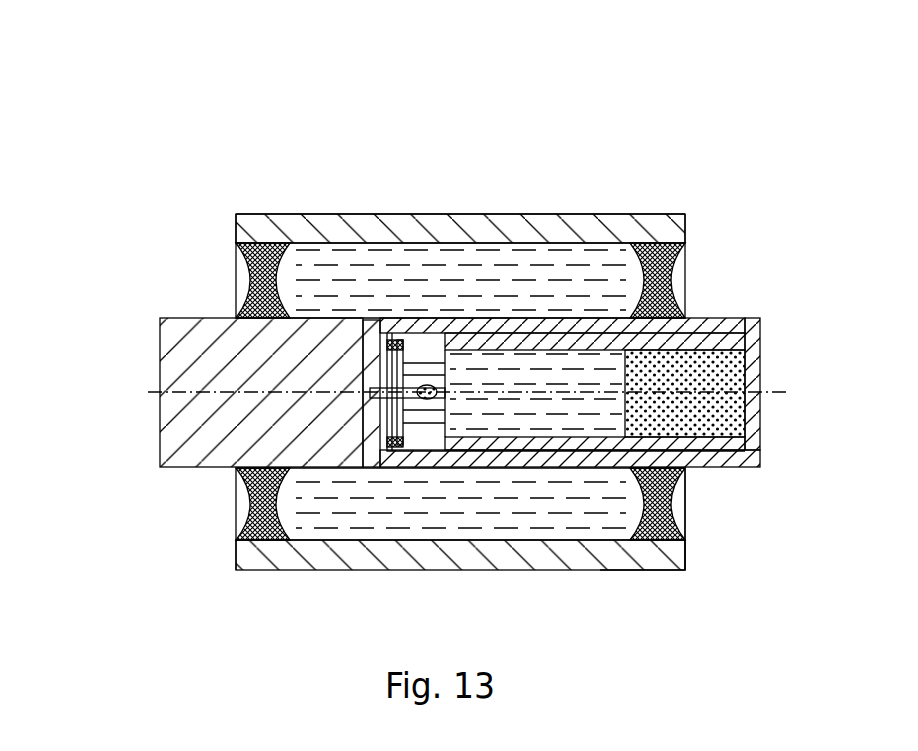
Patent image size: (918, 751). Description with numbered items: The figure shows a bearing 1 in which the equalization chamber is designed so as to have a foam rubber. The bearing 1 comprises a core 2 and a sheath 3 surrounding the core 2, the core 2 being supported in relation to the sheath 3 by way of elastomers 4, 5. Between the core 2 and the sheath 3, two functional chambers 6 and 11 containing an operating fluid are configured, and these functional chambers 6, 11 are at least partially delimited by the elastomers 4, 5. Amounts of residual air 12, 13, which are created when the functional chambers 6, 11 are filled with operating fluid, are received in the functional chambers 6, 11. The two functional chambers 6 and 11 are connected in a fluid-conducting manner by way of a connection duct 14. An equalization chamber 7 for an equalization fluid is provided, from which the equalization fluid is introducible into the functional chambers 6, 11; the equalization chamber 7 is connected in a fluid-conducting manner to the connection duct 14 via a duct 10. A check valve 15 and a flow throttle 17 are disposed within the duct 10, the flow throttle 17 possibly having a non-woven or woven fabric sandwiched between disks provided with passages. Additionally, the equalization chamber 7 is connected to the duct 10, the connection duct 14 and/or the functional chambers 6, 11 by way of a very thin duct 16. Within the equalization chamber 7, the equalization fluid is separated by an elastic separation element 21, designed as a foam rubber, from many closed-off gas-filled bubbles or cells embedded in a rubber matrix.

The bearing 1 is at (362, 120).
The core 2 is at (160, 412).
The sheath 3 is at (593, 213).
The elastomer 4 is at (243, 278).
The elastomer 5 is at (675, 275).
The functional chamber 6 is at (405, 265).
The equalization chamber 7 is at (472, 413).
The duct 10 is at (370, 405).
The functional chamber 11 is at (262, 570).
The residual air 12 is at (623, 252).
The residual air 13 is at (683, 567).
The connection duct 14 is at (363, 327).
The check valve 15 is at (425, 400).
The very thin duct 16 is at (432, 378).
The flow throttle 17 is at (398, 393).
The separation element 21 is at (705, 360).